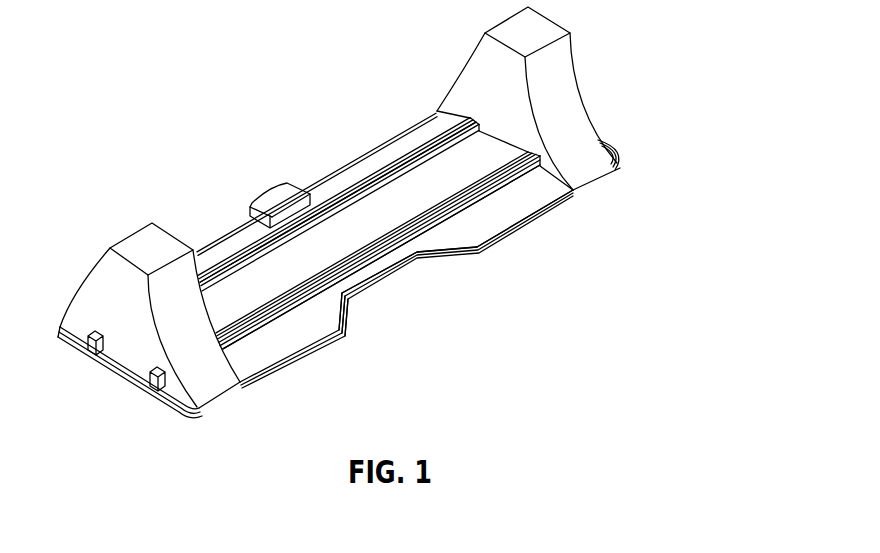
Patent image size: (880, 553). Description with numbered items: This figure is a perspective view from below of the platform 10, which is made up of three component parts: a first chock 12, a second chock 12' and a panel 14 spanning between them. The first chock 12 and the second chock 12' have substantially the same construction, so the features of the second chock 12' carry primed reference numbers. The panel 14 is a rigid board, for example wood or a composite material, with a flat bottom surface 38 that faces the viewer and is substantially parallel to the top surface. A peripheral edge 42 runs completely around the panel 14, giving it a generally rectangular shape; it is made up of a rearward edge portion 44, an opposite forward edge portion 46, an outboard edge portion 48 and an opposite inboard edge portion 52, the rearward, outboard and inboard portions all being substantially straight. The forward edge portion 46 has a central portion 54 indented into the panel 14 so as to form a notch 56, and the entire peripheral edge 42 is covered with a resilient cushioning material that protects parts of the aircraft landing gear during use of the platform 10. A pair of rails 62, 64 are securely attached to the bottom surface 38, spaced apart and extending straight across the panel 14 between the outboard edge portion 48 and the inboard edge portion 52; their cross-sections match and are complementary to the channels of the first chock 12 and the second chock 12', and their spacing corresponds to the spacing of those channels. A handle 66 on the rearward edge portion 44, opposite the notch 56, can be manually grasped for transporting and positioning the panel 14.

The platform 10 is at (666, 42).
The first chock 12 is at (138, 298).
The second chock 12' is at (548, 95).
The panel 14 is at (541, 228).
The bottom surface 38 is at (400, 146).
The peripheral edge 42 is at (288, 366).
The rearward edge portion 44 is at (353, 167).
The forward edge portion 46 is at (560, 201).
The outboard edge portion 48 is at (603, 138).
The inboard edge portion 52 is at (118, 387).
The central portion 54 is at (373, 279).
The notch 56 is at (421, 266).
The rail 62 is at (235, 257).
The rail 64 is at (281, 314).
The handle 66 is at (286, 186).